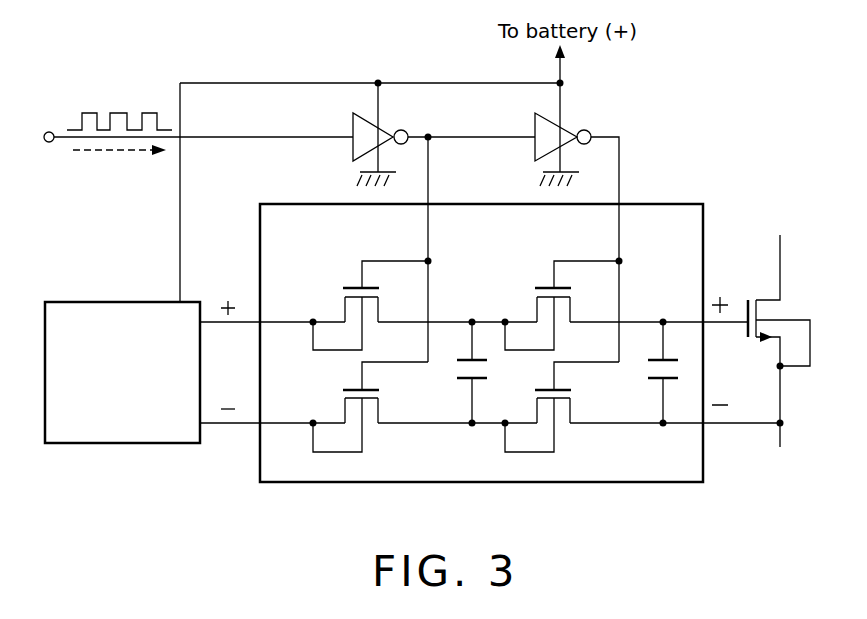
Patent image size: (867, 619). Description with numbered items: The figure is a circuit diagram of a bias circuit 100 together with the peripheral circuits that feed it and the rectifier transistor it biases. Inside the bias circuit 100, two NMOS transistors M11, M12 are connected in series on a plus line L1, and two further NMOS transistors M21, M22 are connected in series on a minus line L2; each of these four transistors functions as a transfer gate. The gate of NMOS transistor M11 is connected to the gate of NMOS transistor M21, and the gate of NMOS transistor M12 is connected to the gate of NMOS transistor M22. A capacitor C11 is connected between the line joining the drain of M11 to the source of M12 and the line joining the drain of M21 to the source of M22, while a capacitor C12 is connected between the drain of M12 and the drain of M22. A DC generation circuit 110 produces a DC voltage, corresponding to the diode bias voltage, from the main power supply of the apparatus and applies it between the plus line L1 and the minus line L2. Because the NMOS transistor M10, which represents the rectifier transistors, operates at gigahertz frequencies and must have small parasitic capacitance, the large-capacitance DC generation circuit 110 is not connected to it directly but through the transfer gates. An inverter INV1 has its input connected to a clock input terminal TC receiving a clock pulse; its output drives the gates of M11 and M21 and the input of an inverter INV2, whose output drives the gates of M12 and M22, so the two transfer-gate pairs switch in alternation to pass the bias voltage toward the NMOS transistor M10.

The bias circuit 100 is at (665, 203).
The DC generation circuit 110 is at (127, 300).
The clock input terminal TC is at (49, 132).
The inverter INV1 is at (385, 118).
The inverter INV2 is at (570, 118).
The plus line L1 is at (246, 319).
The minus line L2 is at (246, 421).
The NMOS transistor M11 is at (345, 318).
The NMOS transistor M12 is at (535, 318).
The NMOS transistor M21 is at (345, 418).
The NMOS transistor M22 is at (535, 418).
The capacitor C11 is at (454, 368).
The capacitor C12 is at (645, 368).
The NMOS transistor M10 is at (782, 310).